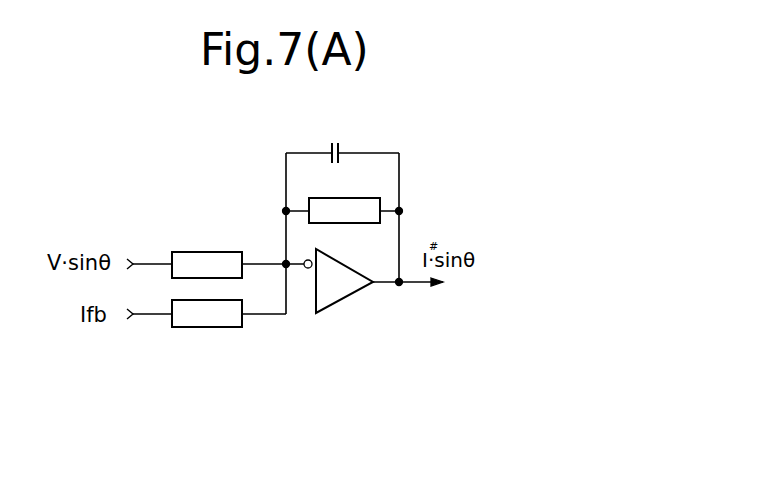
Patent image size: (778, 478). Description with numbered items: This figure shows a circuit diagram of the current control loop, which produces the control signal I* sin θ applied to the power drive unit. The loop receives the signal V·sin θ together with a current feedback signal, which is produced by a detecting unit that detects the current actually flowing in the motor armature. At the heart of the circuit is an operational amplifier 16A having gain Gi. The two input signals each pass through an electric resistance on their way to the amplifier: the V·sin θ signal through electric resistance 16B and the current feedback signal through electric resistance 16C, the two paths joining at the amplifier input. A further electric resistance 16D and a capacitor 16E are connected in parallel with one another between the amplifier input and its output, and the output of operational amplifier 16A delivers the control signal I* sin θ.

The operational amplifier 16A is at (350, 293).
The electric resistance 16B is at (205, 252).
The electric resistance 16C is at (207, 327).
The electric resistance 16D is at (332, 198).
The capacitor 16E is at (342, 150).